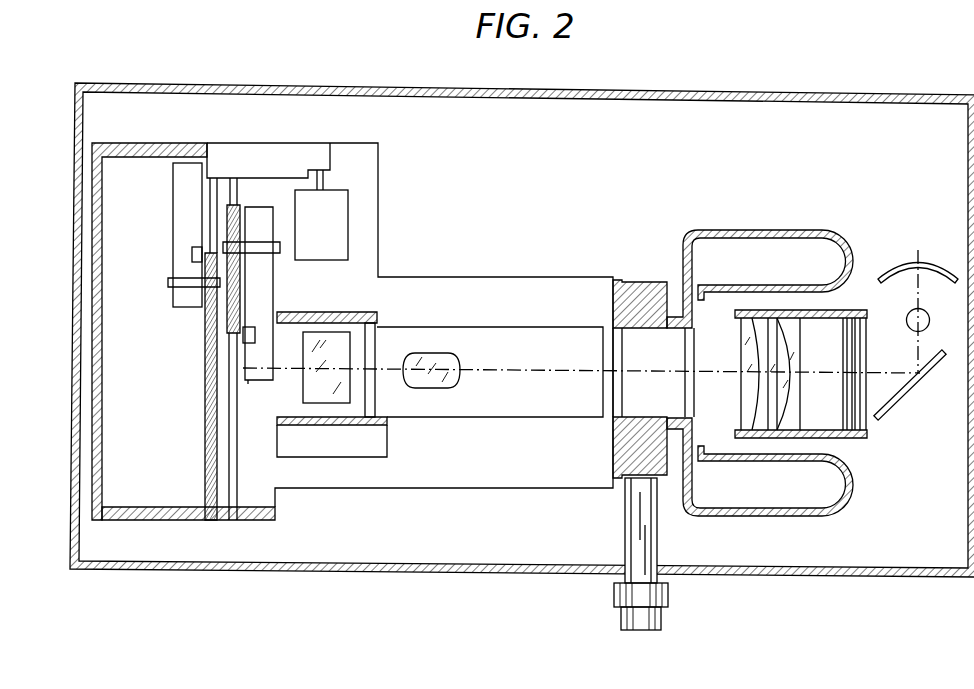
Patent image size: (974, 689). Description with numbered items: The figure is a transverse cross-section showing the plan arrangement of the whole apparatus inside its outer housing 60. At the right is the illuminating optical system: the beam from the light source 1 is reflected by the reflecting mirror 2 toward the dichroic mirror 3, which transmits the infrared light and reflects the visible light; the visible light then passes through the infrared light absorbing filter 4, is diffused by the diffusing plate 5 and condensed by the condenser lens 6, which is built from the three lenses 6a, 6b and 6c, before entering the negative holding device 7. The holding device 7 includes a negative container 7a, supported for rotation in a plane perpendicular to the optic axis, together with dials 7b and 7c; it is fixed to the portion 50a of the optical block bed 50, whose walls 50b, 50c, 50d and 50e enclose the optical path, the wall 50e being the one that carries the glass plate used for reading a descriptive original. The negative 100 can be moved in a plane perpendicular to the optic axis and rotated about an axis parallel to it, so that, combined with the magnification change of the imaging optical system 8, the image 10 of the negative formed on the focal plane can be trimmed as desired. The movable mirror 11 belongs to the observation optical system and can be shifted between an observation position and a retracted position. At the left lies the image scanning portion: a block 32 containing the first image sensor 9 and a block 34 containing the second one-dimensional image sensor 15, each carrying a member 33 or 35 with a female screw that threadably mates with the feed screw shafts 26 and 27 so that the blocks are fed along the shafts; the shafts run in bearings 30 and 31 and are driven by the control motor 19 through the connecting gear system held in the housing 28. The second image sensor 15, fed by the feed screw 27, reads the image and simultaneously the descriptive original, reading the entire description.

The light source 1 is at (930, 319).
The reflecting mirror 2 is at (917, 262).
The dichroic mirror 3 is at (928, 371).
The infrared light absorbing filter 4 is at (857, 420).
The diffusing plate 5 is at (840, 437).
The condenser lens 6 is at (744, 303).
The lens 6a is at (790, 398).
The lens 6b is at (763, 418).
The lens 6c is at (740, 398).
The negative holding device 7 is at (656, 280).
The negative container 7a is at (784, 231).
The dial 7b is at (668, 595).
The dial 7c is at (666, 616).
The imaging optical system 8 is at (436, 414).
The first image sensor 9 is at (257, 333).
The image 10 is at (249, 384).
The movable mirror 11 is at (335, 331).
The second one-dimensional image sensor 15 is at (193, 250).
The control motor 19 is at (349, 212).
The feed screw shaft 26 is at (238, 207).
The feed screw shaft 27 is at (212, 195).
The housing 28 is at (288, 144).
The bearing 30 is at (235, 521).
The bearing 31 is at (206, 521).
The block 32 is at (273, 305).
The member having female screw 33 is at (276, 253).
The block 34 is at (173, 258).
The member having female screw 35 is at (169, 288).
The optical block bed 50 is at (362, 488).
The portion of optical block bed 50a is at (620, 280).
The upper lens support 50b is at (378, 318).
The bottom wall 50c is at (155, 521).
The top wall 50d is at (141, 144).
The wall of optical block 50e is at (317, 447).
The housing 60 is at (930, 97).
The negative 100 is at (693, 477).